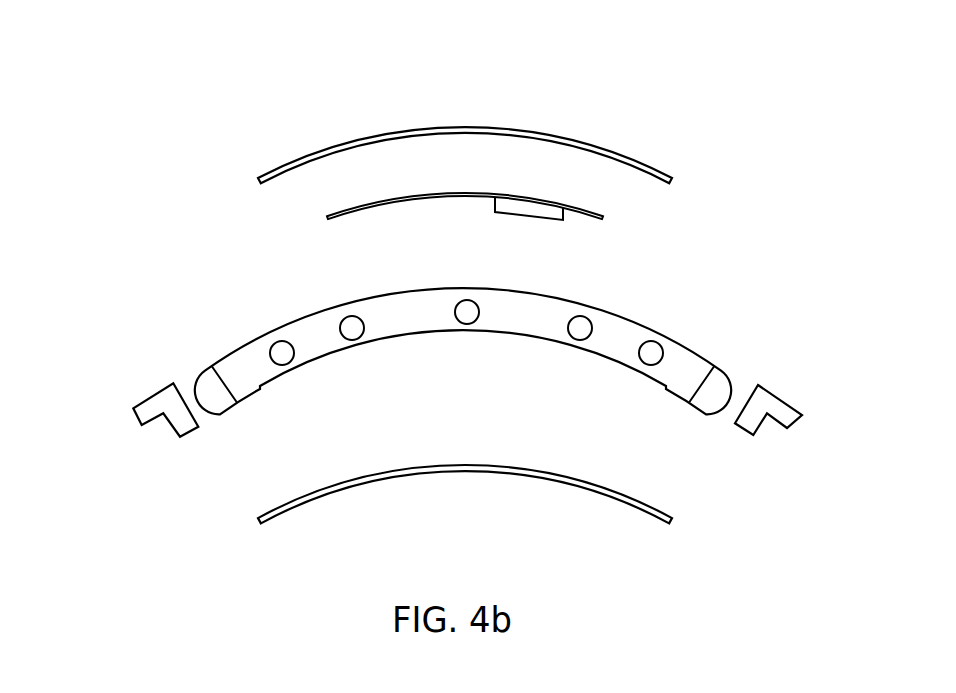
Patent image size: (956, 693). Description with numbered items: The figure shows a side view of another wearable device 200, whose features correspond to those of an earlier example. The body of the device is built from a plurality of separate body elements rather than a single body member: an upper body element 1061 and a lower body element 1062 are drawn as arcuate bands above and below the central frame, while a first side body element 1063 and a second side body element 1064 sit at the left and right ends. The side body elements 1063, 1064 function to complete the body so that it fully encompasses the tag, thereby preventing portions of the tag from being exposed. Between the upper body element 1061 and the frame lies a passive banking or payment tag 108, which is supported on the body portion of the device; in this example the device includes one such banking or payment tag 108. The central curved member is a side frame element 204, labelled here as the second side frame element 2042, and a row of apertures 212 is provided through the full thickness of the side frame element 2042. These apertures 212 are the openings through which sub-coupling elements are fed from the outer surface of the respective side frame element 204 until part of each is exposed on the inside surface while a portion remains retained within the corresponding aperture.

The wearable device 200 is at (168, 178).
The upper body element 1061 is at (463, 126).
The lower body element 1062 is at (442, 473).
The first side body element 1063 is at (142, 429).
The second side body element 1064 is at (753, 436).
The banking or payment tag 108 is at (325, 218).
The side frame element 204 is at (186, 341).
The second side frame element 2042 is at (679, 340).
The apertures 212 is at (651, 356).